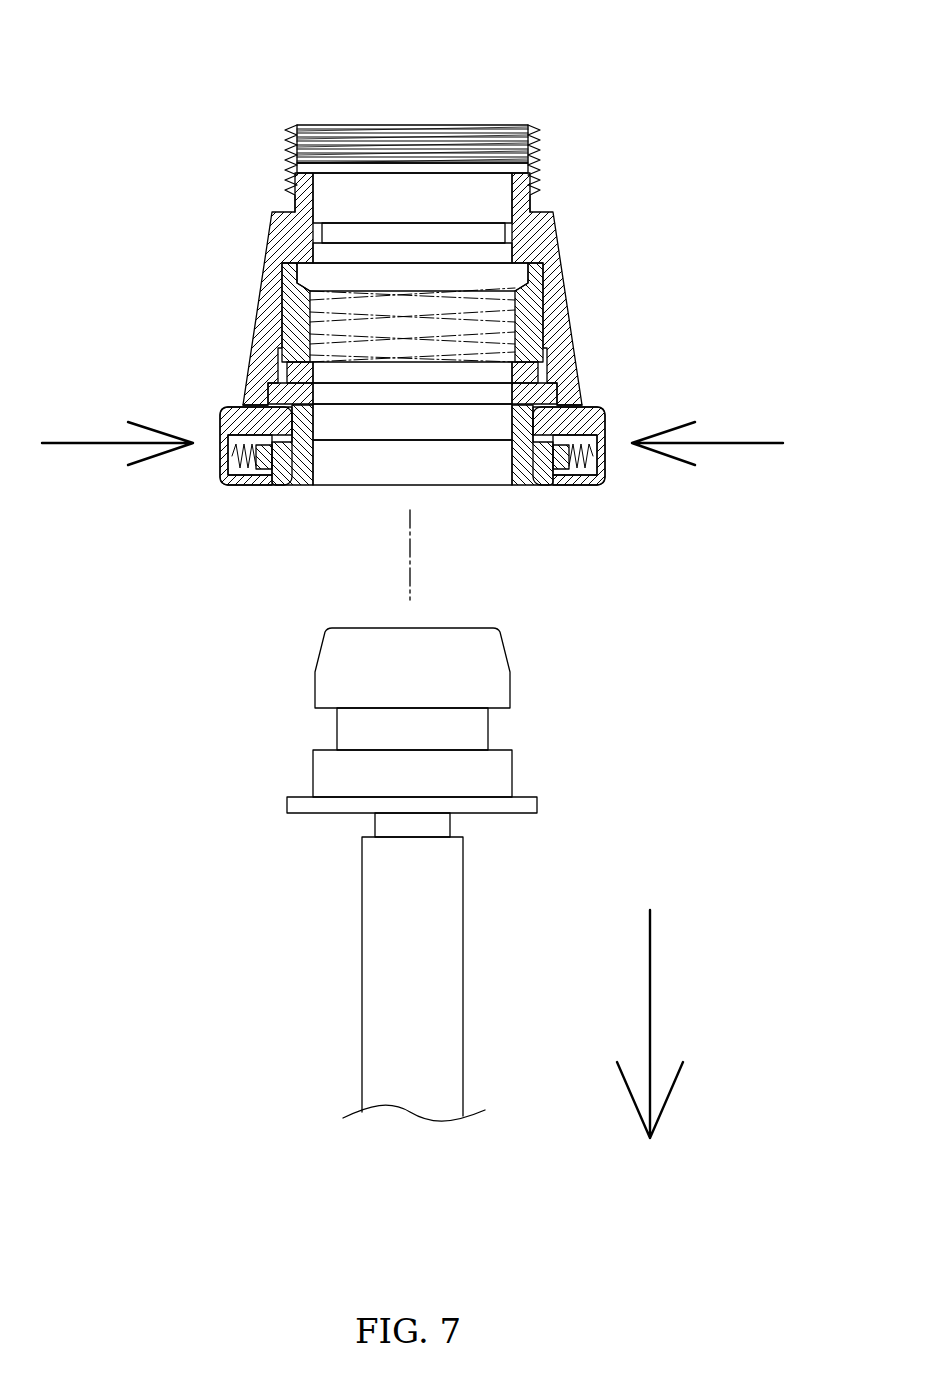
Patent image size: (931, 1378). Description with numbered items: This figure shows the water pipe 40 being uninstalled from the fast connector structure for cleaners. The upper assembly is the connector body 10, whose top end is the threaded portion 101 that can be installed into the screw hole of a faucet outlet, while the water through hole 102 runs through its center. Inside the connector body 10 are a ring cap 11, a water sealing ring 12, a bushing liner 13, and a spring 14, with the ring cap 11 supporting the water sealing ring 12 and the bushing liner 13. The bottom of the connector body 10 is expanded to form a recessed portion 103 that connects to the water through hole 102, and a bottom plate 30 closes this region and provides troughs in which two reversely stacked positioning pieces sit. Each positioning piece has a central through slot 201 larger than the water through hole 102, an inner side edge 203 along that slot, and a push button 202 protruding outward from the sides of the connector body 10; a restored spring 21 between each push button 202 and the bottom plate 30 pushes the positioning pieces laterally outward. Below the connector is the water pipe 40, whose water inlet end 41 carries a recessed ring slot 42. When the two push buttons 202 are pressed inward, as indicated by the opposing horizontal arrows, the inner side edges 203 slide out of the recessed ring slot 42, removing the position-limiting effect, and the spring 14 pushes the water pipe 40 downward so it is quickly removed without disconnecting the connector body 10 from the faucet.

The connector body 10 is at (288, 119).
The threaded portion 101 is at (540, 130).
The water through hole 102 is at (480, 237).
The recessed portion 103 is at (257, 403).
The ring cap 11 is at (560, 404).
The retaining ring 12 is at (527, 357).
The bushing liner 13 is at (285, 318).
The spring 14 is at (317, 278).
The restored spring 21 is at (222, 484).
The through slot 201 is at (453, 433).
The push button 202 is at (217, 452).
The inner side edge 203 is at (545, 418).
The bottom plate 30 is at (286, 494).
The water pipe 40 is at (424, 843).
The water inlet end 41 is at (480, 650).
The recessed ring slot 42 is at (500, 730).